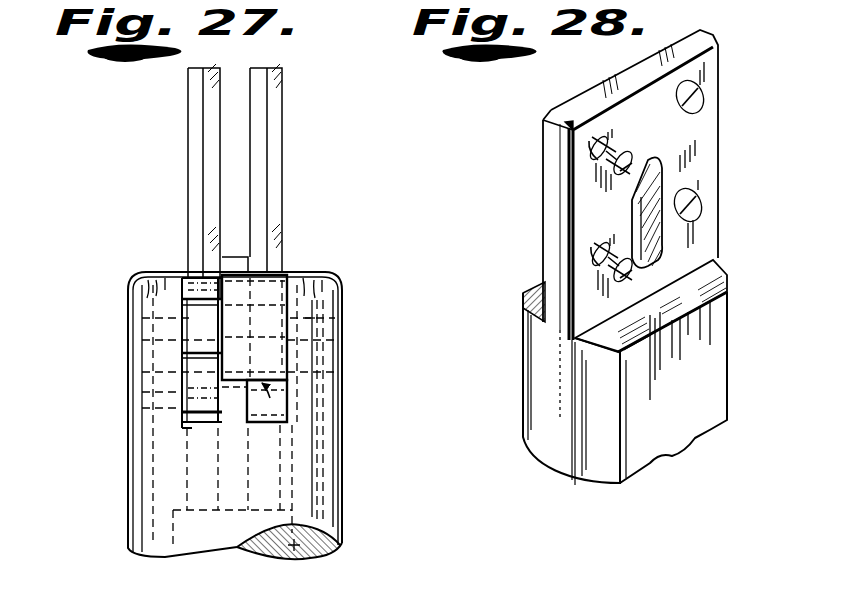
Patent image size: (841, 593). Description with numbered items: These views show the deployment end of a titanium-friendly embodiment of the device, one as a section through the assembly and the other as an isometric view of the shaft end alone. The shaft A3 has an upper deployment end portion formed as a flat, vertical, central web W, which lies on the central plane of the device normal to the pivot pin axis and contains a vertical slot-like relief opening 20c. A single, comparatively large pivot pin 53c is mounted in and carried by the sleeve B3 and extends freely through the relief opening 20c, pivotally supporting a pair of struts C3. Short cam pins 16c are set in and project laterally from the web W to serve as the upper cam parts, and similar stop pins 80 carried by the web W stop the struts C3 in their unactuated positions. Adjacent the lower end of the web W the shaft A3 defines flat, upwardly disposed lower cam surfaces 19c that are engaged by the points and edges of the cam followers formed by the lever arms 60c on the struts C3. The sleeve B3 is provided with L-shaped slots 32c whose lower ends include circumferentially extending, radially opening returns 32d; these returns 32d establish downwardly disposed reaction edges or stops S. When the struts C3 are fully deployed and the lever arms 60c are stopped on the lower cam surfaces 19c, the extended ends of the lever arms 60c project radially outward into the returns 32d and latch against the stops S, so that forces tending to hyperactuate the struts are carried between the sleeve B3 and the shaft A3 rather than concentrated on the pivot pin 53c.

In FIG. 27, the struts C3 is at (325, 100).
In FIG. 27, the stop pins 80 is at (200, 280).
In FIG. 28, the stop pins 80 is at (698, 95).
In FIG. 27, the central web W is at (237, 258).
In FIG. 28, the central web W is at (718, 135).
In FIG. 27, the slots 32c is at (193, 333).
In FIG. 27, the pivot pin 53c is at (297, 338).
In FIG. 27, the cam pins 16c is at (190, 406).
In FIG. 28, the cam pins 16c is at (694, 201).
In FIG. 27, the lever arms 60c is at (270, 410).
In FIG. 27, the stop edges S is at (273, 397).
In FIG. 27, the returns 32d is at (255, 418).
In FIG. 27, the sleeve B3 is at (342, 489).
In FIG. 27, the shaft A3 is at (300, 545).
In FIG. 28, the shaft A3 is at (720, 345).
In FIG. 28, the relief opening 20c is at (640, 200).
In FIG. 28, the lower cam surfaces 19c is at (680, 296).